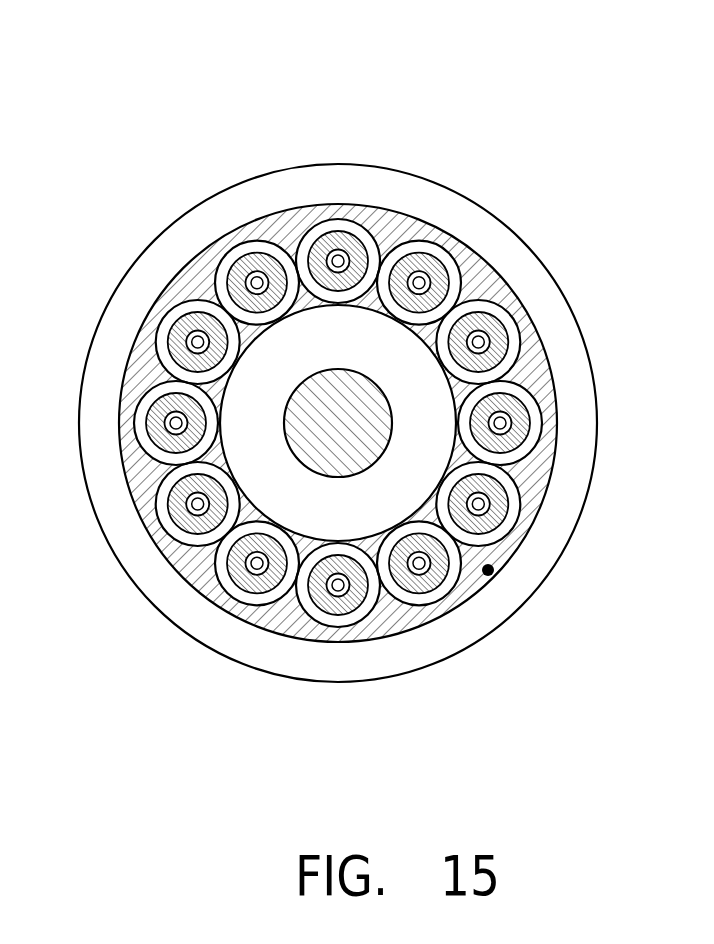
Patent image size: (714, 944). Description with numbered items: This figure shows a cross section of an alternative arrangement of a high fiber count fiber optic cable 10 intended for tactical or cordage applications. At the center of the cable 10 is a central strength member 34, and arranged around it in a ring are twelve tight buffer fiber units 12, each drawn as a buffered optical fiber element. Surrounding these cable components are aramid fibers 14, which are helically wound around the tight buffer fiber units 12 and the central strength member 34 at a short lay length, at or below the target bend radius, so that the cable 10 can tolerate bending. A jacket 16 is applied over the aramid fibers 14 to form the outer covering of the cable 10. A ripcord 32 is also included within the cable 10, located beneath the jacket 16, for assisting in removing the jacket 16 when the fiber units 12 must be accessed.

The fiber optic cable 10 is at (402, 95).
The tight buffer fiber units 12 is at (419, 283).
The aramid fibers 14 is at (492, 277).
The jacket 16 is at (570, 408).
The ripcord 32 is at (488, 570).
The central strength member 34 is at (422, 448).